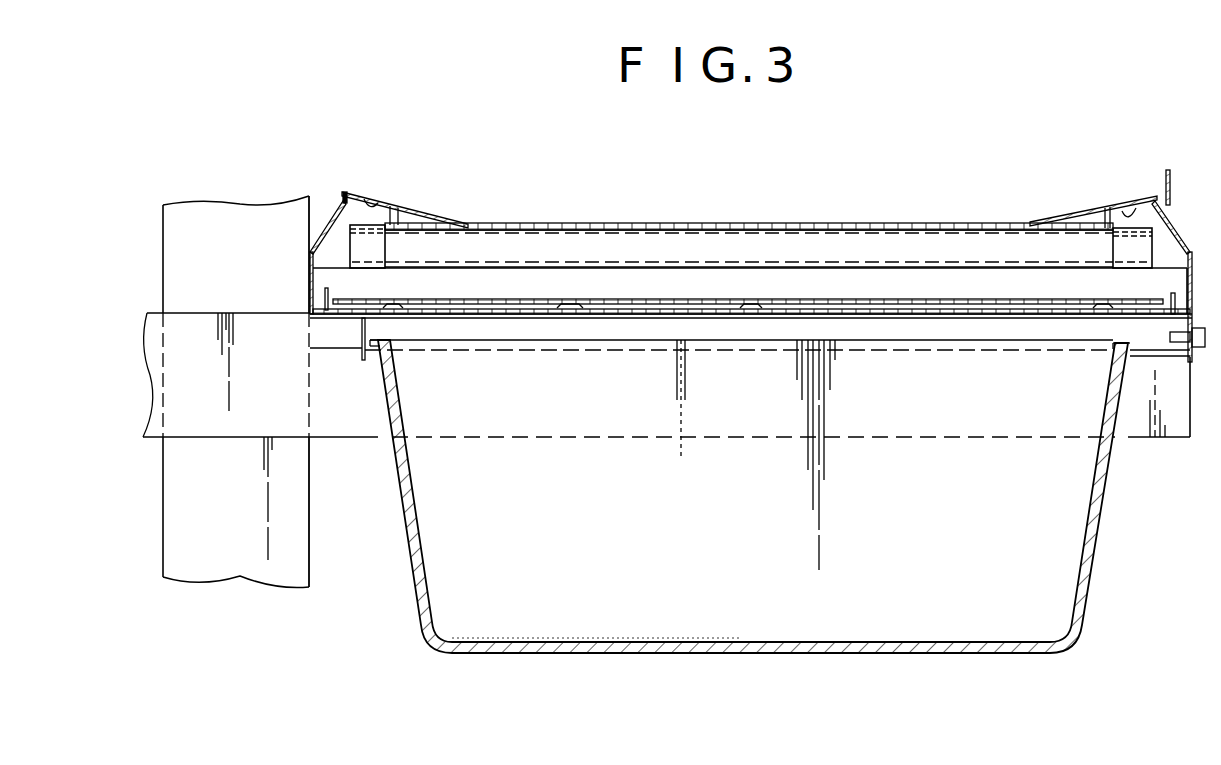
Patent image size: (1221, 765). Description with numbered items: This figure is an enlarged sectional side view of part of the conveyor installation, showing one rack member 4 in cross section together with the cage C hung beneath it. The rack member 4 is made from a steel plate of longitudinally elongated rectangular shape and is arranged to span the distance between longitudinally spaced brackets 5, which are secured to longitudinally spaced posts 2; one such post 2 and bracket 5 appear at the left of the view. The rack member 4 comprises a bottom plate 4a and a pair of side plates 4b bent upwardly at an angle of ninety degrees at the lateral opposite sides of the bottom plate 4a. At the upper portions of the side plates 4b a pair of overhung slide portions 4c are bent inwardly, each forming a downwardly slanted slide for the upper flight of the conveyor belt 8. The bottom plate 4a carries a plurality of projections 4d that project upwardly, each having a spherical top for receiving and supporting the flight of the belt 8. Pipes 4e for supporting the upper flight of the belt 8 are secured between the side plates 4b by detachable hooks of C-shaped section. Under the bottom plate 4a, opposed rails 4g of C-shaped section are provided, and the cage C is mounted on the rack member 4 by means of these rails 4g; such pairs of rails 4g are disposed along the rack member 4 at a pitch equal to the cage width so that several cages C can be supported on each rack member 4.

The post 2 is at (300, 553).
The rack member 4 is at (332, 212).
The bottom plate 4a is at (630, 318).
The side plate 4b is at (308, 281).
The overhung slide portion 4c is at (388, 212).
The projection 4d is at (395, 308).
The pipe 4e is at (817, 237).
The rail 4g is at (337, 350).
The bracket 5 is at (356, 425).
The conveyor belt 8 is at (453, 222).
The cage C is at (1090, 542).